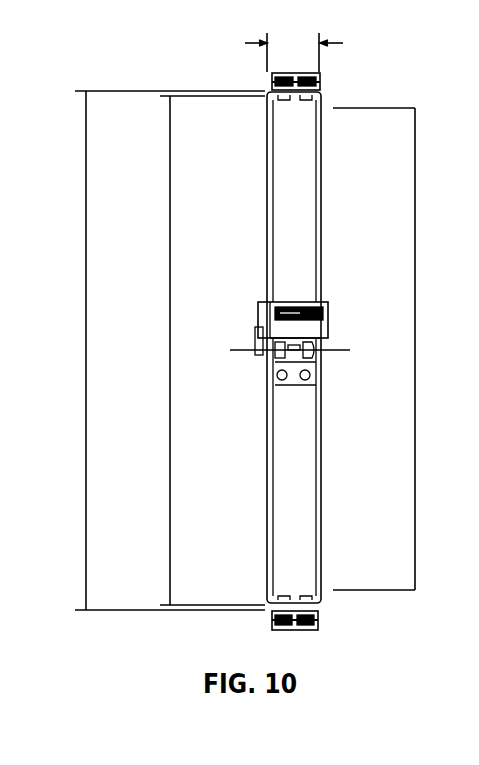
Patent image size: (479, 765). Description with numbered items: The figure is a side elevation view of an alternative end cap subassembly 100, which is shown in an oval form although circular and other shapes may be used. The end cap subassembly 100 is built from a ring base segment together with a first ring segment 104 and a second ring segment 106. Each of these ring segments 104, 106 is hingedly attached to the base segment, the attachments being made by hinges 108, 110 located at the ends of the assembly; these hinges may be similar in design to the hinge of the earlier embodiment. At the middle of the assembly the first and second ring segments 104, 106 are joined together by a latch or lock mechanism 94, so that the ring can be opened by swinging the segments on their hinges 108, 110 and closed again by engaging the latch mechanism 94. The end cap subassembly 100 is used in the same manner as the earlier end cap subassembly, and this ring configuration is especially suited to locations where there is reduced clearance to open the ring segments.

The latch mechanism 94 is at (330, 326).
The end cap subassembly 100 is at (344, 221).
The first ring segment 104 is at (290, 212).
The second ring segment 106 is at (290, 481).
The hinge 108 is at (272, 77).
The hinge 110 is at (318, 622).